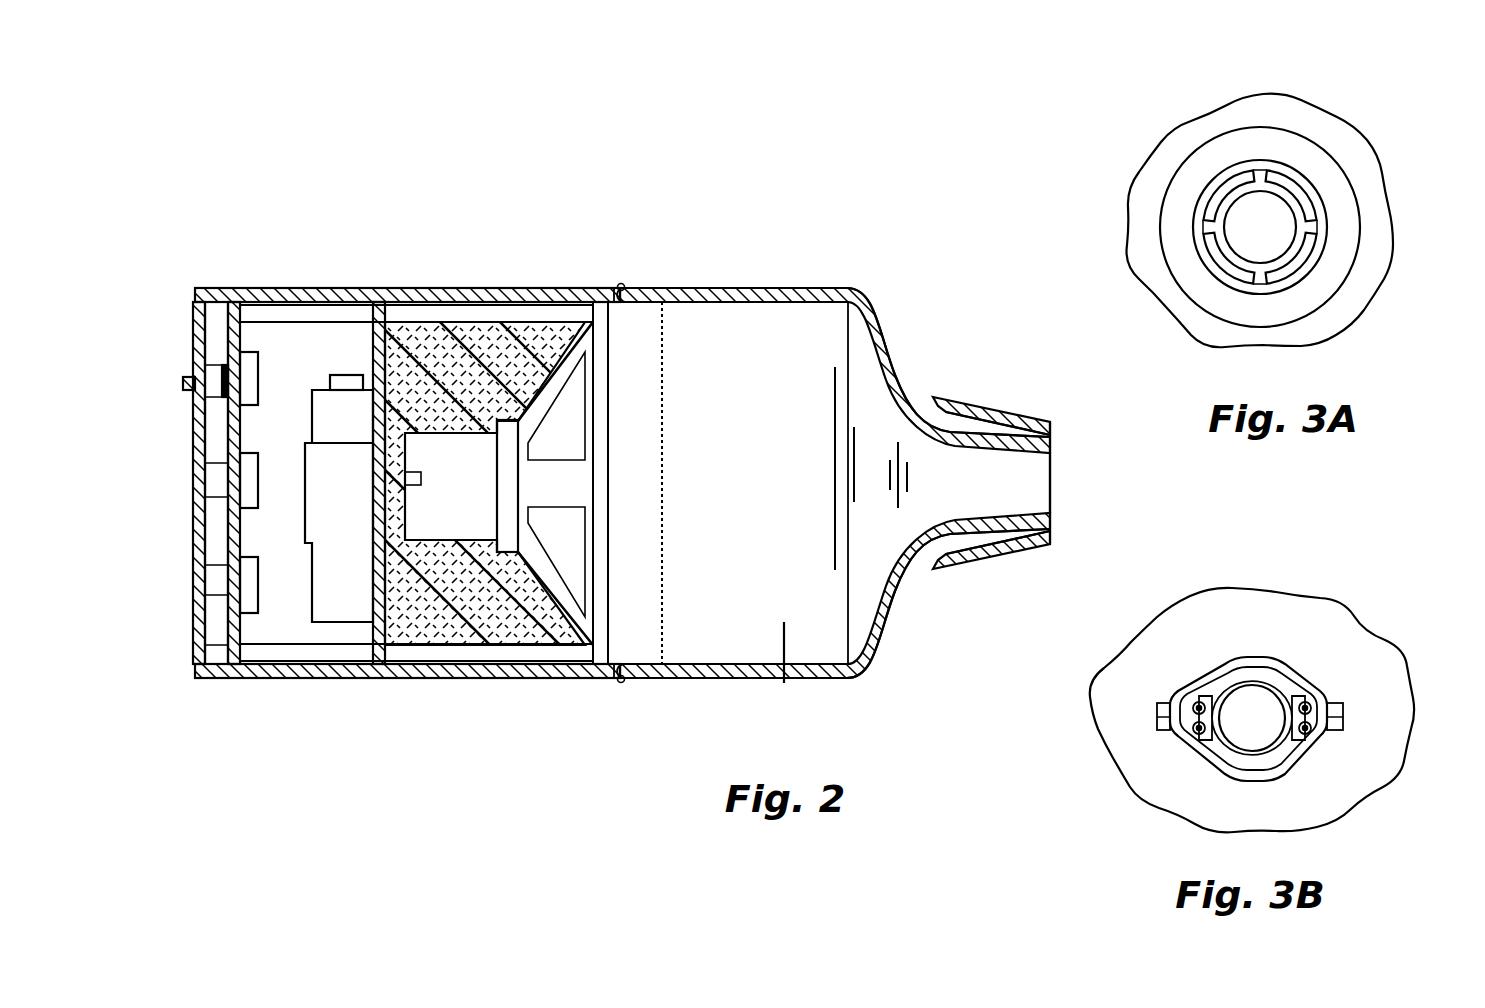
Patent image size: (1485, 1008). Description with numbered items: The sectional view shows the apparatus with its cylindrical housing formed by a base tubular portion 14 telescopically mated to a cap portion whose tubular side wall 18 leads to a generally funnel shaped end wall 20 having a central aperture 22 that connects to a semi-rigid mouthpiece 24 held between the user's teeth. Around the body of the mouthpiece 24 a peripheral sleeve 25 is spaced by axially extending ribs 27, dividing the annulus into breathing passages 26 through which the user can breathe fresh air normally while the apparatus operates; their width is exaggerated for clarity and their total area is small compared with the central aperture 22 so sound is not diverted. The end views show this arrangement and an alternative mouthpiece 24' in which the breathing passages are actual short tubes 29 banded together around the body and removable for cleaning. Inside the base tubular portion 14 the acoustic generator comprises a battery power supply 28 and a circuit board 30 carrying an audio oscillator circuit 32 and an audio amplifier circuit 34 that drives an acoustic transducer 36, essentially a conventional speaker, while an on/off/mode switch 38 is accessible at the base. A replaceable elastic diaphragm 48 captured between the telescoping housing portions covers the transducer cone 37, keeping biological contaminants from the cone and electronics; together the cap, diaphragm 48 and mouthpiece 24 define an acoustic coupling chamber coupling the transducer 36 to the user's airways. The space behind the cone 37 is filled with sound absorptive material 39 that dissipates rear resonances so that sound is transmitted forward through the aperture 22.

In FIG. 2, the base tubular portion 14 is at (487, 290).
In FIG. 2, the tubular side wall 18 is at (757, 290).
In FIG. 2, the funnel shaped end wall 20 is at (893, 583).
In FIG. 3A, the funnel shaped end wall 20 is at (1386, 213).
In FIG. 3B, the funnel shaped end wall 20 is at (1370, 691).
In FIG. 2, the central aperture 22 is at (1052, 470).
In FIG. 3A, the central aperture 22 is at (1290, 230).
In FIG. 3B, the central aperture 22 is at (1250, 707).
In FIG. 2, the mouthpiece 24 is at (994, 424).
In FIG. 3A, the mouthpiece 24 is at (1285, 200).
In FIG. 3B, the alternative mouthpiece 24' is at (1252, 651).
In FIG. 2, the peripheral sleeve 25 is at (990, 415).
In FIG. 3A, the peripheral sleeve 25 is at (1263, 138).
In FIG. 2, the breathing passages 26 is at (1062, 434).
In FIG. 3A, the breathing passages 26 is at (1305, 208).
In FIG. 2, the axially extending ribs 27 is at (784, 683).
In FIG. 2, the battery power supply 28 is at (345, 390).
In FIG. 3A, the short tubes 29 is at (1257, 280).
In FIG. 3B, the short tubes 29 is at (1345, 732).
In FIG. 2, the circuit board 30 is at (258, 375).
In FIG. 2, the audio oscillator circuit 32 is at (248, 495).
In FIG. 2, the audio amplifier circuit 34 is at (252, 590).
In FIG. 2, the acoustic transducer 36 is at (415, 527).
In FIG. 2, the transducer cone 37 is at (663, 443).
In FIG. 2, the on/off/mode switch 38 is at (183, 380).
In FIG. 2, the sound absorptive material 39 is at (492, 630).
In FIG. 2, the elastic diaphragm 48 is at (665, 605).